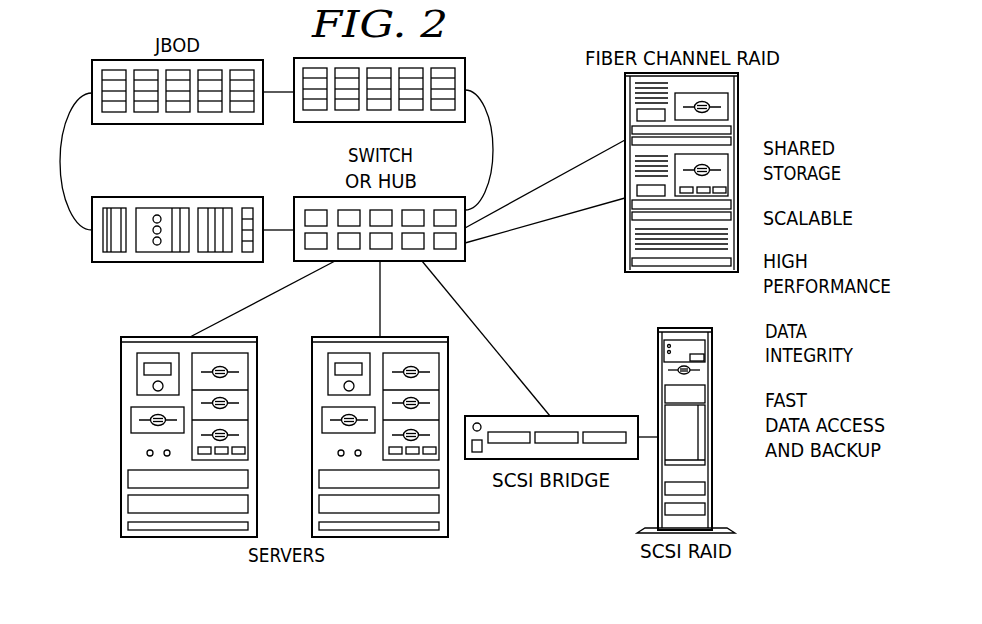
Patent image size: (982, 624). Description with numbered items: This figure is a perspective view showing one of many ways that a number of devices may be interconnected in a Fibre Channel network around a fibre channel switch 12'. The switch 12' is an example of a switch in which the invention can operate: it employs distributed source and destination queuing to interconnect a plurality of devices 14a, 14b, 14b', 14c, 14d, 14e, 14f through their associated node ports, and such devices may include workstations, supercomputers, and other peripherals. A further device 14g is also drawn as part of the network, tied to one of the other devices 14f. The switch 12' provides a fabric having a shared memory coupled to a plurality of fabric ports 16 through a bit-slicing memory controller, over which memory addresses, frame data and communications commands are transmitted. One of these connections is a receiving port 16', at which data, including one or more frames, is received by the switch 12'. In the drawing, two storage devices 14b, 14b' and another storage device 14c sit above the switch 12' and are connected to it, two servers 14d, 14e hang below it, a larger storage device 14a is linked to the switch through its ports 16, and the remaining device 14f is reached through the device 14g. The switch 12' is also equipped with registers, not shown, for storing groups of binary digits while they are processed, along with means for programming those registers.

The fibre channel switch 12' is at (379, 257).
The device 14a is at (740, 118).
The device 14b is at (145, 87).
The device 14b' is at (413, 84).
The device 14c is at (178, 197).
The device 14d is at (190, 540).
The device 14e is at (380, 540).
The device 14f is at (712, 475).
The SCSI bridge 14g is at (580, 416).
The fabric port 16 is at (455, 187).
The receiving port 16' is at (467, 267).